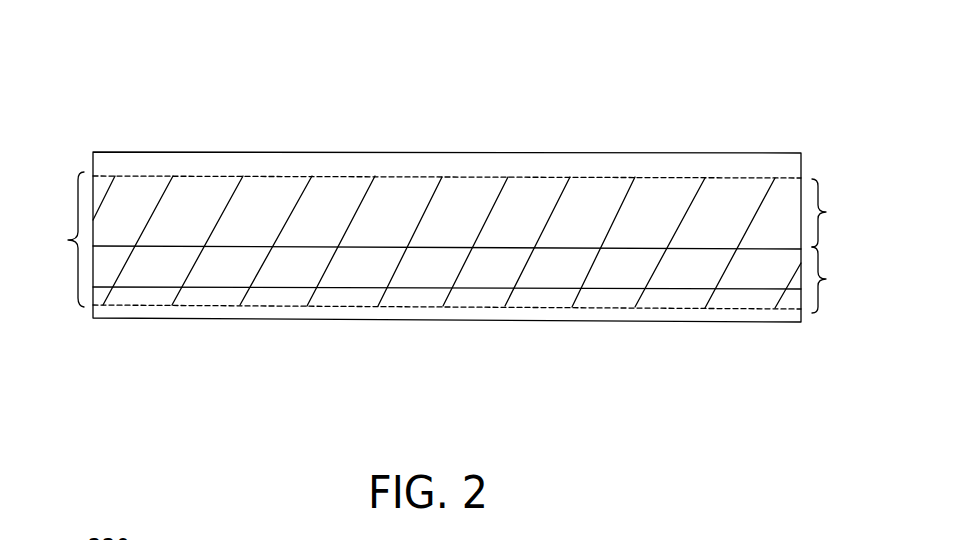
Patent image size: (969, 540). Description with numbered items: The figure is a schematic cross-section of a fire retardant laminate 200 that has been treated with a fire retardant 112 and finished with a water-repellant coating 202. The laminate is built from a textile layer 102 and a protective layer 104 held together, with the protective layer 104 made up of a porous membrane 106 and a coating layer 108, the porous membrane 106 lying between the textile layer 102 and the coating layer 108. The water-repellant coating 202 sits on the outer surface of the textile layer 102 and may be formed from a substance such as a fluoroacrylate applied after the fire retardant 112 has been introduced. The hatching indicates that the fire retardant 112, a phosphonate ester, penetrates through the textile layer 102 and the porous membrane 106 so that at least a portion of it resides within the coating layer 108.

The fire retardant laminate 200 is at (140, 97).
The water-repellant coating 202 is at (105, 161).
The fire retardant 112 is at (68, 240).
The textile layer 102 is at (826, 212).
The protective layer 104 is at (860, 267).
The porous membrane 106 is at (173, 266).
The coating layer 108 is at (718, 315).